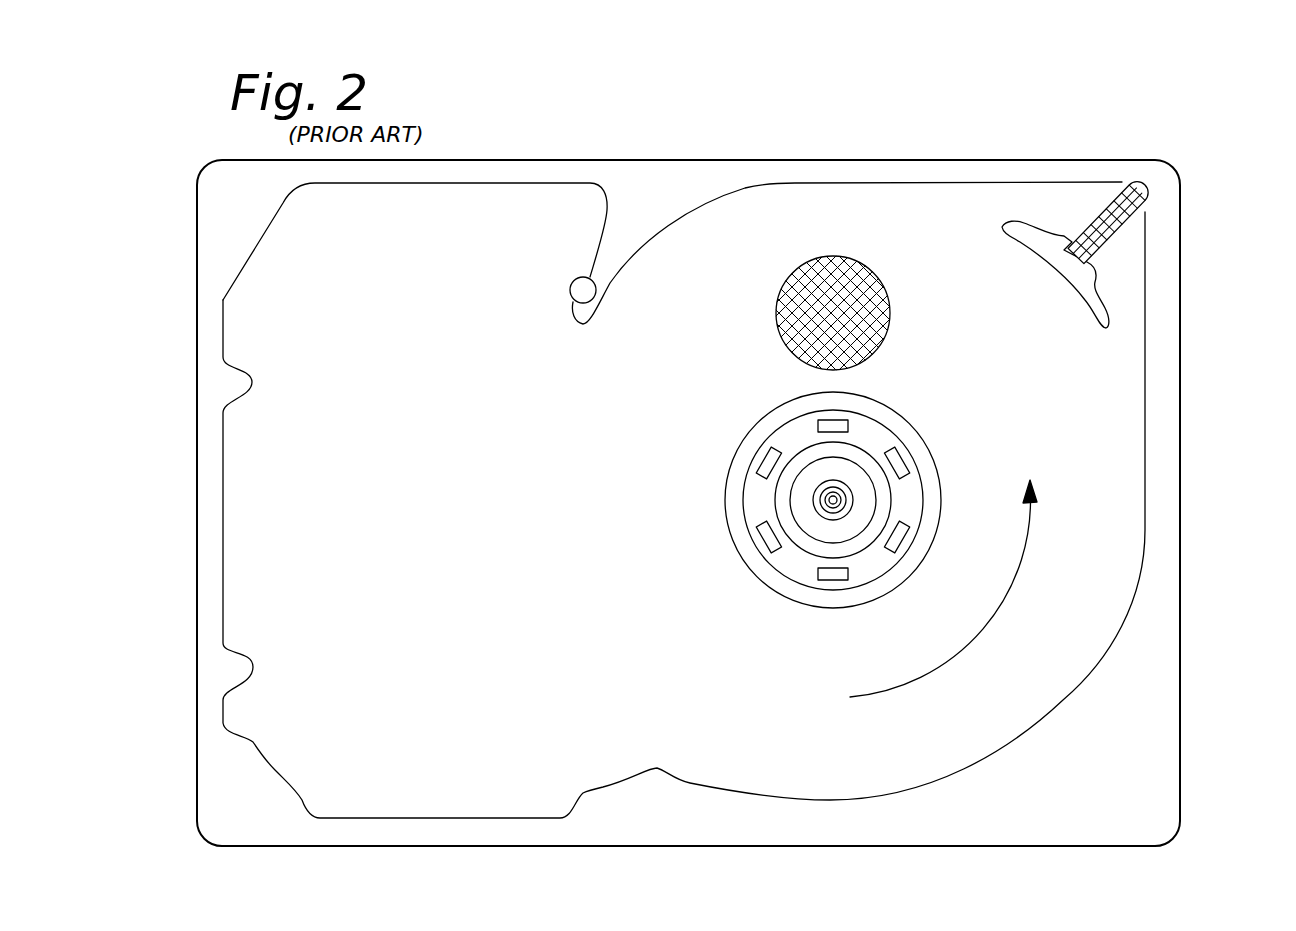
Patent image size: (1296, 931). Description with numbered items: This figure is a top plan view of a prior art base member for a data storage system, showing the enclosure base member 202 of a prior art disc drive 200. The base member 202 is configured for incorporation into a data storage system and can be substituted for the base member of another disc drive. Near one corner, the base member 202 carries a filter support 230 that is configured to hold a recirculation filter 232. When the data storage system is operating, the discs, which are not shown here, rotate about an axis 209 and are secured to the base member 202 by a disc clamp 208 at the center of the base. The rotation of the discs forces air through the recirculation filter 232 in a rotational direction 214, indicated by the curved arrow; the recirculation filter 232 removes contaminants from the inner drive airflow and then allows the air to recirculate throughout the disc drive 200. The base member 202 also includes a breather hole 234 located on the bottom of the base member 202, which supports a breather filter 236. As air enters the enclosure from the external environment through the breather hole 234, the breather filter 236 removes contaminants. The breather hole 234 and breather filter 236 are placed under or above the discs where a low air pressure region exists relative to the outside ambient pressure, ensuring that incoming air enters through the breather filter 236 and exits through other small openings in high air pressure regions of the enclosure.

The disc drive 200 is at (1012, 121).
The base member 202 is at (1163, 604).
The disc clamp 208 is at (758, 498).
The axis 209 is at (833, 500).
The rotational direction 214 is at (1008, 597).
The filter support 230 is at (1097, 297).
The recirculation filter 232 is at (1157, 163).
The breather hole 234 is at (829, 223).
The breather filter 236 is at (818, 273).